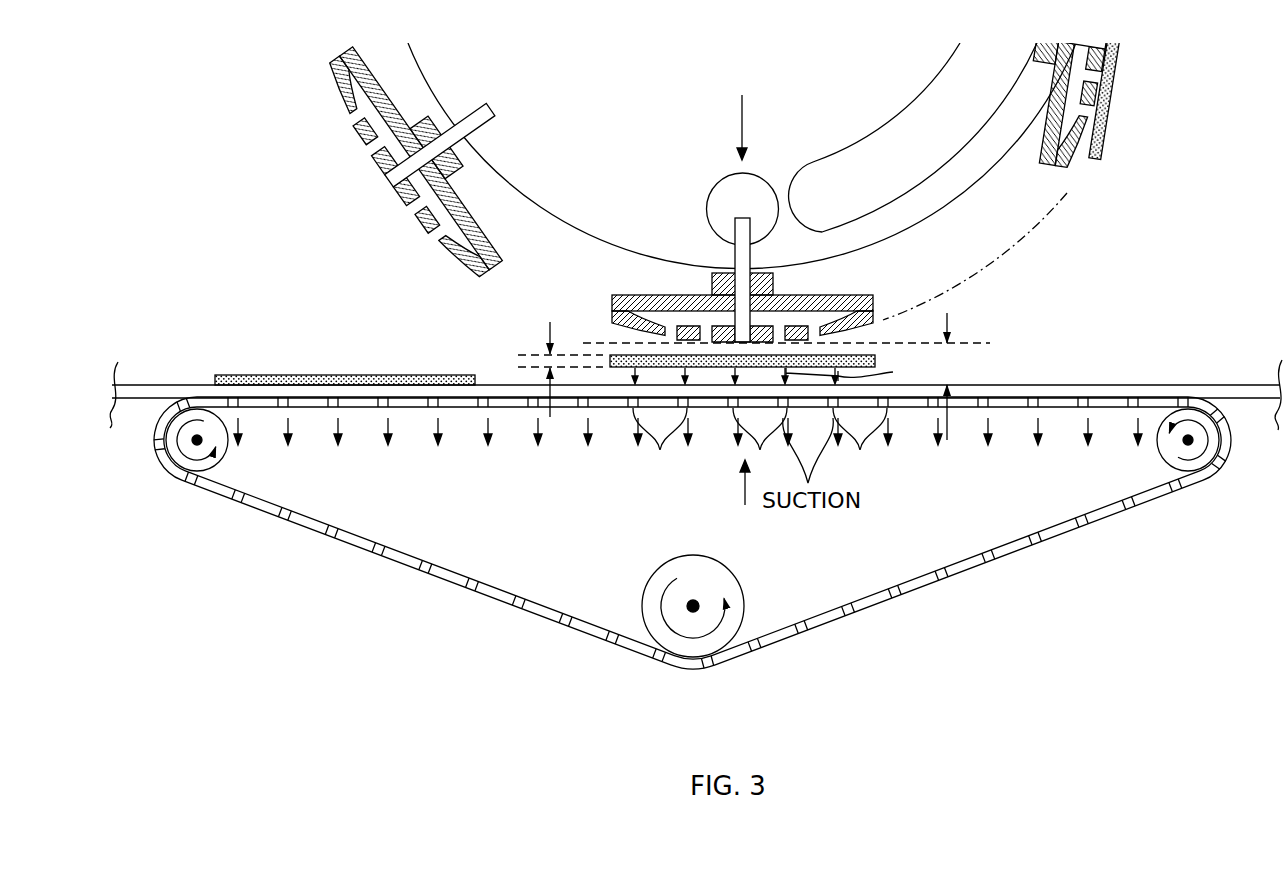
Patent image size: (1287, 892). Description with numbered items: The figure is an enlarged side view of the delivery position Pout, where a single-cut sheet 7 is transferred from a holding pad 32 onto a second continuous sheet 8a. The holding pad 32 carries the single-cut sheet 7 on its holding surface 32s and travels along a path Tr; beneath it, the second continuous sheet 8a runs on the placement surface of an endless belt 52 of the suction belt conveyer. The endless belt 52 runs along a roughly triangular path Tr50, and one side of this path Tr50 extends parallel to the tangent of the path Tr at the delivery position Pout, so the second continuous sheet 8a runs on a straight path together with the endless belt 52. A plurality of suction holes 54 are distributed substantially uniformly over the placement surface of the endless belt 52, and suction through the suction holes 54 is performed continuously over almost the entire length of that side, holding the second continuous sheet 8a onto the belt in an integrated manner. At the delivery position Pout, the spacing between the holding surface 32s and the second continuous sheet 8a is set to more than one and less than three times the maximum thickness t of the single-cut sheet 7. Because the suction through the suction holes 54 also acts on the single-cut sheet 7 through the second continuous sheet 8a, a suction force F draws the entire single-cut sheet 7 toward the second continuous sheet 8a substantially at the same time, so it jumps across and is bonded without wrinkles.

The single-cut sheet 7 is at (350, 375).
The second continuous sheet 8a is at (1082, 382).
The holding pad 32 is at (462, 246).
The holding surface 32s is at (728, 345).
The endless belt 52 is at (1010, 563).
The roughly triangular path Tr50 is at (692, 533).
The suction holes 54 is at (760, 443).
The path of the holding pads Tr is at (995, 276).
The delivery position Pout is at (740, 115).
The suction (negative) pressure Pn is at (742, 498).
The suction force F is at (846, 370).
The maximum thickness of the single-cut sheet t is at (541, 369).